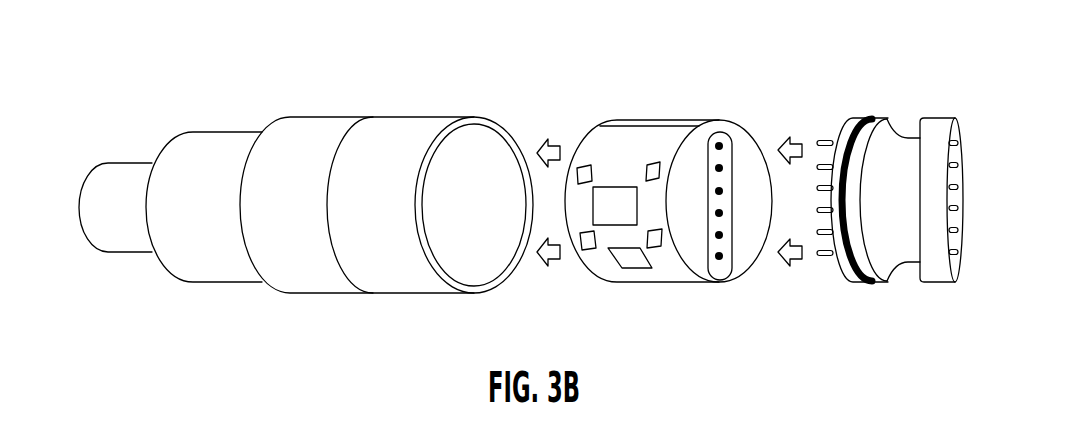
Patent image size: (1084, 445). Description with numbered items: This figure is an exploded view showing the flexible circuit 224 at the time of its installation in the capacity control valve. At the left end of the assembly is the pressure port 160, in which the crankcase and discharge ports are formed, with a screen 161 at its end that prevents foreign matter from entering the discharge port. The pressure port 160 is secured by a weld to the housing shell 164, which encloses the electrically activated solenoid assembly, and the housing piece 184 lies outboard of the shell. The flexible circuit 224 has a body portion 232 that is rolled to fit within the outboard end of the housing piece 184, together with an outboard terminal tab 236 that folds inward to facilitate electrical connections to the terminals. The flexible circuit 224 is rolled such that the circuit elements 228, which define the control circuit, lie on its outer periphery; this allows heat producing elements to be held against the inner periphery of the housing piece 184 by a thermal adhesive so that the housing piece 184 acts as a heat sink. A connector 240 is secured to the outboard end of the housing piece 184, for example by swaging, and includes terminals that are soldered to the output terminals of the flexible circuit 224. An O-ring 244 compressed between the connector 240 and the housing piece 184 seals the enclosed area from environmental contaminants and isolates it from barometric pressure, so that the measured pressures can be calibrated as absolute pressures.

The screen 161 is at (122, 240).
The pressure port 160 is at (218, 265).
The housing shell 164 is at (330, 277).
The housing piece 184 is at (415, 277).
The flexible circuit 224 is at (654, 189).
The body portion 232 is at (597, 260).
The circuit elements 228 is at (618, 210).
The outboard terminal tab 236 is at (722, 268).
The O-ring 244 is at (838, 266).
The connector 240 is at (890, 234).